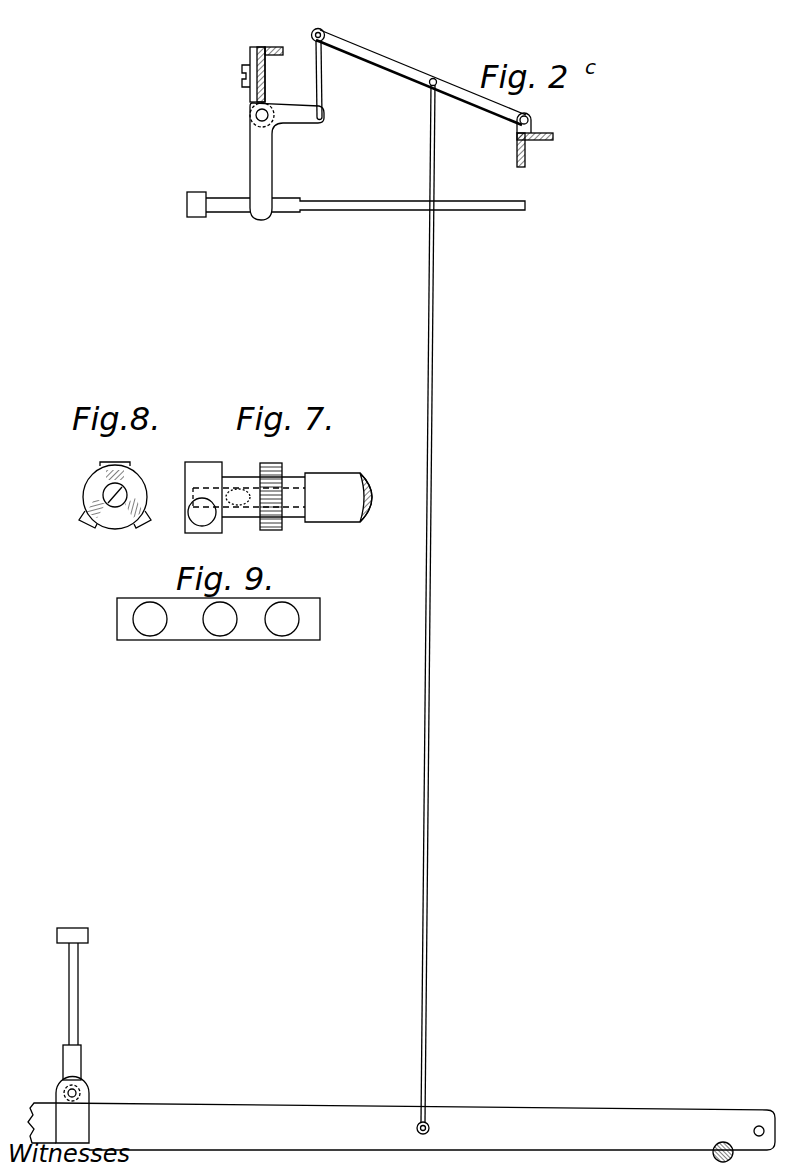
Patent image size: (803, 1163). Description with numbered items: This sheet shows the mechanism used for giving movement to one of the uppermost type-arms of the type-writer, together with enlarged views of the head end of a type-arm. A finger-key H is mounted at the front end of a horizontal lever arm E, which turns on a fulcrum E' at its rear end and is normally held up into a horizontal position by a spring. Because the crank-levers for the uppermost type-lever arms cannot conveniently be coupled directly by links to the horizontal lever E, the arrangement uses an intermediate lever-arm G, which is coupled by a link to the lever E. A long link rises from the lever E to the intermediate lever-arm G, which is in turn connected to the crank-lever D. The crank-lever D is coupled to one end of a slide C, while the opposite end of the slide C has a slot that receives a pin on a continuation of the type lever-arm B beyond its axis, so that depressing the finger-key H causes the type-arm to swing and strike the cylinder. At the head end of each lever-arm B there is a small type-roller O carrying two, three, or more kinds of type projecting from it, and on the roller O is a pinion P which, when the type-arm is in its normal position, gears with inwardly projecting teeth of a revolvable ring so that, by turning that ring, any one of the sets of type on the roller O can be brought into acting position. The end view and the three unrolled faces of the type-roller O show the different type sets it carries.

In FIG. 2C, the intermediate lever-arm G is at (428, 596).
In FIG. 2C, the crank-lever D is at (287, 161).
In FIG. 2C, the slide C is at (356, 222).
In FIG. 2C, the finger-key H is at (83, 1025).
In FIG. 2C, the horizontal lever arm E is at (401, 1114).
In FIG. 2C, the fulcrum E' is at (736, 1152).
In FIG. 7, the type-roller O is at (138, 428).
In FIG. 8, the type-roller O is at (84, 488).
In FIG. 9, the type-roller O is at (203, 619).
In FIG. 7, the pinion P is at (281, 530).
In FIG. 7, the lever-arm B is at (338, 497).